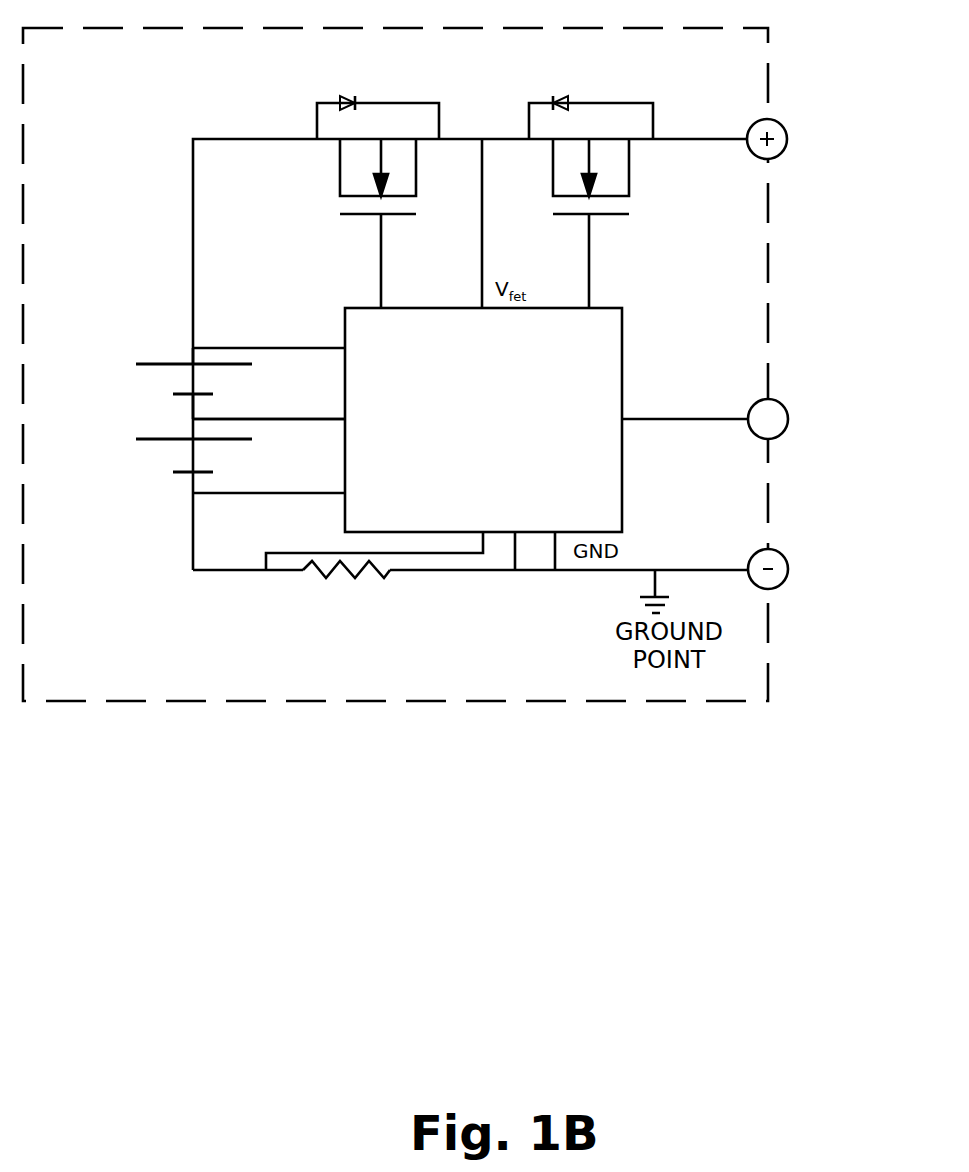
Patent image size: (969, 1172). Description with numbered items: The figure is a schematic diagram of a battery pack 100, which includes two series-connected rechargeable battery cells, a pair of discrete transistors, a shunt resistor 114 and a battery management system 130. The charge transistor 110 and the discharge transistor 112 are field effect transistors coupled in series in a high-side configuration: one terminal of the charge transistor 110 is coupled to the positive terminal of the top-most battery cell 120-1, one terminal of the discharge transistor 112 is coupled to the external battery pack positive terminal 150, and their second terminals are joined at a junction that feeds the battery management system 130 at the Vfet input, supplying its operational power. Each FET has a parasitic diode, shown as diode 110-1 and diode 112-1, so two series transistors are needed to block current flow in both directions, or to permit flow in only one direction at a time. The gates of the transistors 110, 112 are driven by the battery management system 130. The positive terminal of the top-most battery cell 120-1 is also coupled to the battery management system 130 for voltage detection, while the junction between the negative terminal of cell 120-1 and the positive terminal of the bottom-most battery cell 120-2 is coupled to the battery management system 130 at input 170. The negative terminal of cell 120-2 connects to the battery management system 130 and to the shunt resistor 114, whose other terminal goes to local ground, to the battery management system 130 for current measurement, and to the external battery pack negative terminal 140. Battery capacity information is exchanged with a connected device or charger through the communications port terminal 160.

The battery pack 100 is at (570, 701).
The charge transistor 110 is at (308, 204).
The parasitic diode of charge transistor 110-1 is at (401, 103).
The discharge transistor 112 is at (670, 204).
The parasitic diode of discharge transistor 112-1 is at (610, 103).
The shunt resistor 114 is at (323, 573).
The top-most battery cell 120-1 is at (156, 363).
The bottom-most battery cell 120-2 is at (156, 438).
The battery management system 130 is at (622, 340).
The external battery pack negative terminal 140 is at (782, 554).
The external battery pack positive terminal 150 is at (781, 124).
The communications port terminal 160 is at (782, 404).
The battery management system input 170 is at (278, 424).